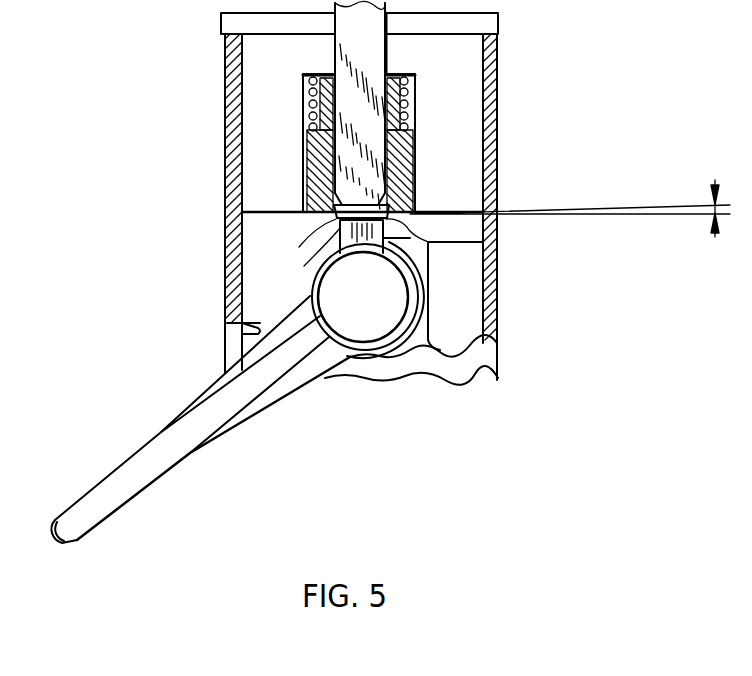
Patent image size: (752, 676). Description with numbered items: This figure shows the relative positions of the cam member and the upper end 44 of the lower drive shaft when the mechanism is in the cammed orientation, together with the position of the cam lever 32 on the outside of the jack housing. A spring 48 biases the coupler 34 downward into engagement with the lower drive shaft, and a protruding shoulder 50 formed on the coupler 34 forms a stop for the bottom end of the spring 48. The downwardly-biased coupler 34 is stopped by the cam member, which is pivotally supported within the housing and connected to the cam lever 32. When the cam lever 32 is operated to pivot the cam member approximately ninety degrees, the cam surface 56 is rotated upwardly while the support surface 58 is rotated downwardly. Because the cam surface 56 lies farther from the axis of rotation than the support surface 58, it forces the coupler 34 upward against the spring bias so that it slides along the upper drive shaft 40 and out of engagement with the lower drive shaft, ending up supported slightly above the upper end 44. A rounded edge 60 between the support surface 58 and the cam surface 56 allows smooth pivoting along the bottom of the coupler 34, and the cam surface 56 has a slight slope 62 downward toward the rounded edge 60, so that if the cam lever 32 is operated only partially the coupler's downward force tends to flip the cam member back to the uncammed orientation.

The cam lever 32 is at (140, 468).
The coupler 34 is at (415, 156).
The upper drive shaft 40 is at (405, 189).
The upper end of the lower drive shaft 44 is at (483, 242).
The spring 48 is at (413, 104).
The protruding shoulder 50 is at (413, 122).
The cam surface 56 is at (398, 207).
The support surface 58 is at (322, 256).
The rounded edge 60 is at (330, 222).
The slight slope 62 is at (363, 190).